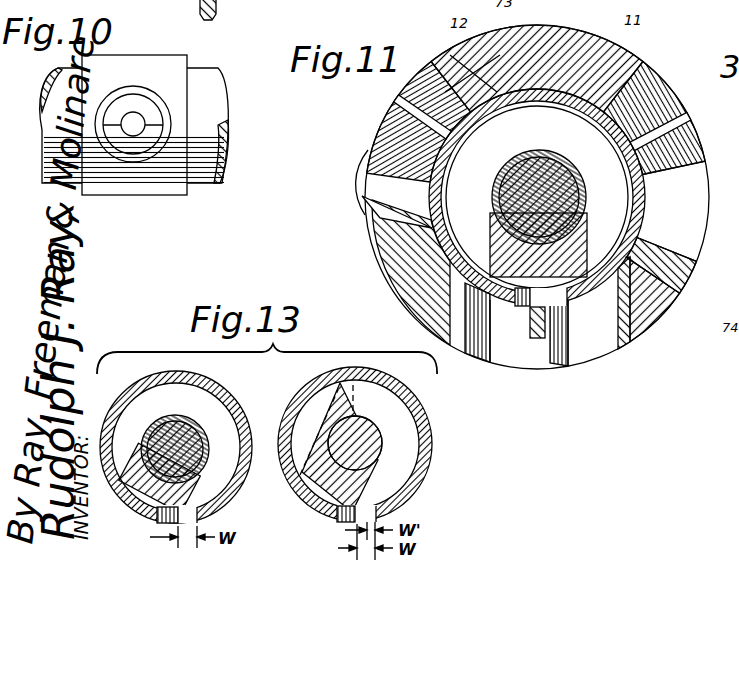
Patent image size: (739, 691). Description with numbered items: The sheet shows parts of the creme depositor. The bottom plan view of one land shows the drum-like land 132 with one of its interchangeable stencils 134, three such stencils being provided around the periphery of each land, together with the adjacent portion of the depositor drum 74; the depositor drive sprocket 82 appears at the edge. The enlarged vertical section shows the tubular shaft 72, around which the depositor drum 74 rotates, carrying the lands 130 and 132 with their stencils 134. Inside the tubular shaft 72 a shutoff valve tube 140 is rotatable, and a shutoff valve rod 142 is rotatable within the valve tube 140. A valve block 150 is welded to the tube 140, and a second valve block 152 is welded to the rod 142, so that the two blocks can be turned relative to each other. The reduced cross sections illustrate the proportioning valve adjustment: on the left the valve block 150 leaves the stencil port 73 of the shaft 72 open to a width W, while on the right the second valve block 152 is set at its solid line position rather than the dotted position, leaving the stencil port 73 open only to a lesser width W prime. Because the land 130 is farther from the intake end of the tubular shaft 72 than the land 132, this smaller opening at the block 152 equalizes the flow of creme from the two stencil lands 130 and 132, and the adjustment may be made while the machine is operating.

In FIG. 10, the depositor drum 74 is at (164, 54).
In FIG. 11, the depositor drum 74 is at (368, 243).
In FIG. 10, the drum-like land 132 is at (178, 61).
In FIG. 10, the interchangeable stencils 134 is at (133, 114).
In FIG. 11, the interchangeable stencils 134 is at (362, 185).
In FIG. 10, the depositor drive sprocket 82 is at (217, 10).
In FIG. 11, the tubular shaft 72 is at (517, 113).
In FIG. 13, the tubular shaft 72 is at (236, 404).
In FIG. 11, the stencil ports 73 is at (563, 297).
In FIG. 13, the stencil ports 73 is at (165, 524).
In FIG. 11, the shutoff valve tube 140 is at (541, 152).
In FIG. 13, the shutoff valve tube 140 is at (183, 406).
In FIG. 11, the shutoff valve rod 142 is at (556, 177).
In FIG. 13, the shutoff valve rod 142 is at (196, 430).
In FIG. 11, the valve block 150 is at (580, 240).
In FIG. 13, the valve block 150 is at (202, 478).
In FIG. 13, the second valve block 152 is at (379, 462).
In FIG. 11, the drum-like land 130 is at (589, 33).